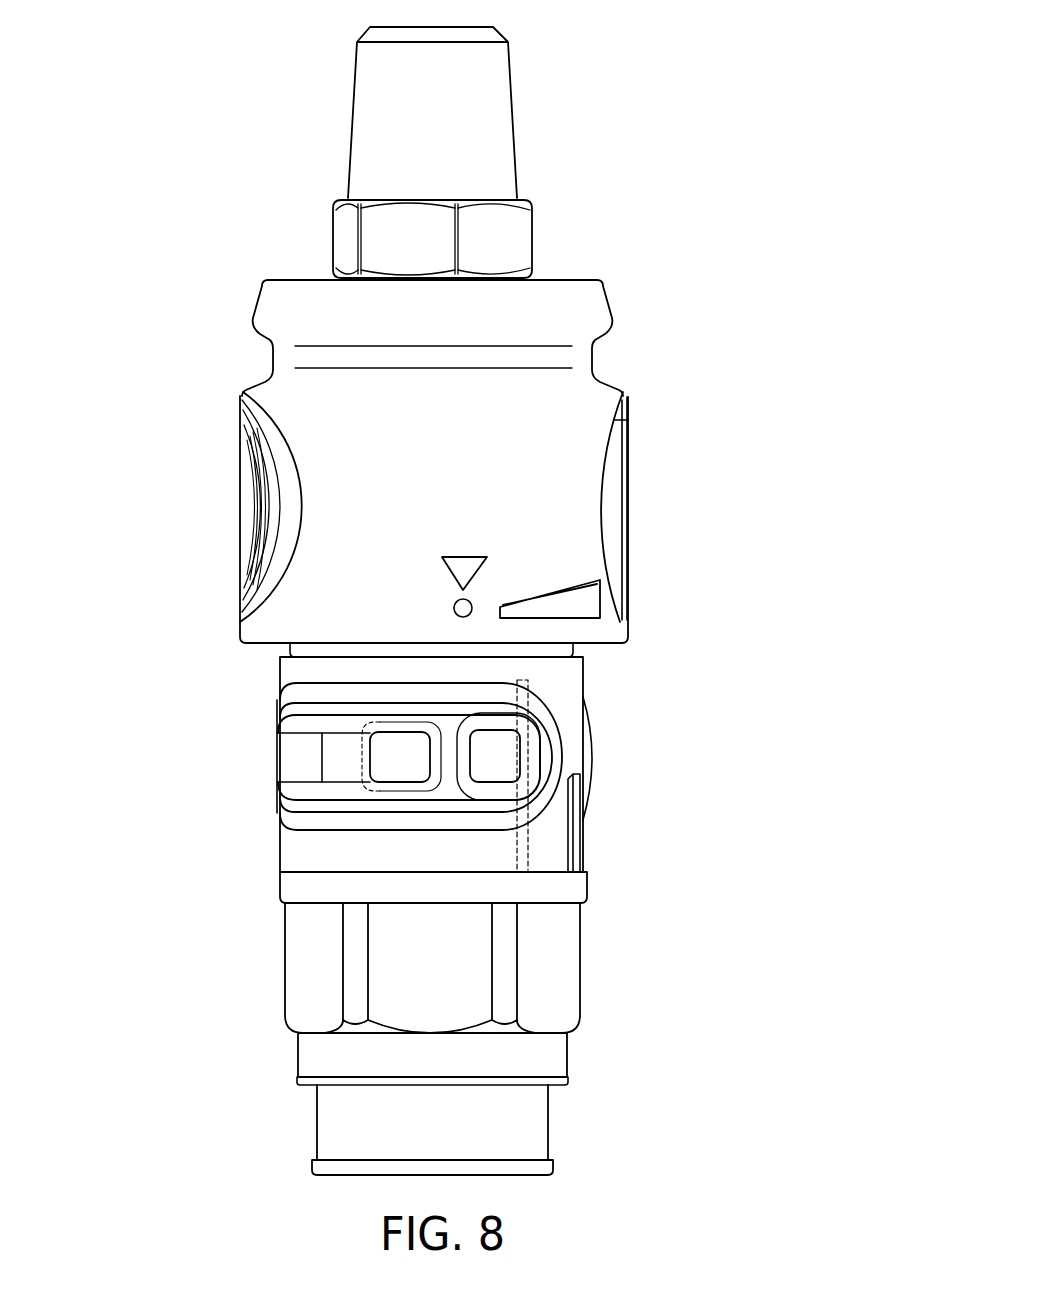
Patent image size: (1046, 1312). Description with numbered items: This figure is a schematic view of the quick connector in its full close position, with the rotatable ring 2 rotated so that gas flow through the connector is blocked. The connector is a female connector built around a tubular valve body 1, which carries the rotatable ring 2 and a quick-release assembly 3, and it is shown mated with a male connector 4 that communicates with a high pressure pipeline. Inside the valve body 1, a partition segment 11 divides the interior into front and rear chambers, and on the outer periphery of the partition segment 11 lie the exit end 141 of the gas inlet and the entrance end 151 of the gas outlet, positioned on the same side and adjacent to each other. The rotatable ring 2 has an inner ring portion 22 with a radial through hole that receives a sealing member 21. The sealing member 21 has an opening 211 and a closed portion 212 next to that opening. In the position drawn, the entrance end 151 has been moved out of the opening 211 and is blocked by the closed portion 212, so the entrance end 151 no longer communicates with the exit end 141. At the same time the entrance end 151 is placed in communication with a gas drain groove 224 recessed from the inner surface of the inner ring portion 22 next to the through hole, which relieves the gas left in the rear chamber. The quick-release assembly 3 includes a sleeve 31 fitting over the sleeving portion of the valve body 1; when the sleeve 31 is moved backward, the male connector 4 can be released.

The valve body 1 is at (560, 948).
The rotatable ring 2 is at (614, 719).
The quick-release assembly 3 is at (658, 447).
The male connector 4 is at (497, 170).
The partition segment 11 is at (332, 738).
The sealing member 21 is at (290, 702).
The inner ring portion 22 is at (292, 850).
The sleeve 31 is at (575, 502).
The exit end 141 is at (428, 753).
The entrance end 151 is at (512, 783).
The opening 211 is at (327, 773).
The closed portion 212 is at (493, 747).
The gas drain groove 224 is at (530, 840).